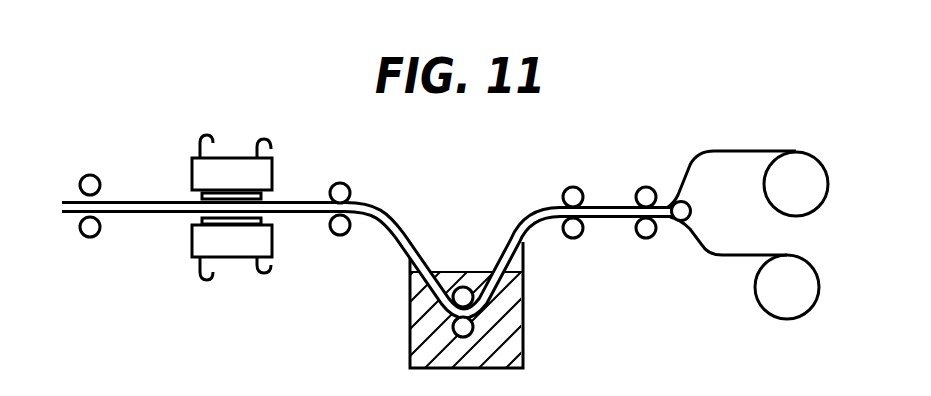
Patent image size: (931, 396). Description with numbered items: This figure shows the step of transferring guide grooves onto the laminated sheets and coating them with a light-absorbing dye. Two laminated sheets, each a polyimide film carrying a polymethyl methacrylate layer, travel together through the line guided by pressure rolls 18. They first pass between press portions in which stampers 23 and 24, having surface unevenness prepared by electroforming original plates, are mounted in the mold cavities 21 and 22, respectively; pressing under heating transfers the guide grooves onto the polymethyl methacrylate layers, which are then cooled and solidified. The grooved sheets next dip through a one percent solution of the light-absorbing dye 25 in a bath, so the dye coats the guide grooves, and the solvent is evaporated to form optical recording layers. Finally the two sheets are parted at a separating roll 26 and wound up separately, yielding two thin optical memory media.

The pressure roll 18 is at (340, 183).
The mold cavity 21 is at (235, 168).
The mold cavity 22 is at (230, 253).
The stamper 23 is at (194, 197).
The stamper 24 is at (197, 218).
The light-absorbing dye 25 is at (524, 333).
The separating roll 26 is at (691, 210).